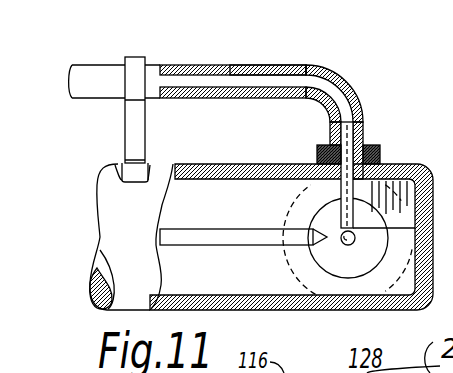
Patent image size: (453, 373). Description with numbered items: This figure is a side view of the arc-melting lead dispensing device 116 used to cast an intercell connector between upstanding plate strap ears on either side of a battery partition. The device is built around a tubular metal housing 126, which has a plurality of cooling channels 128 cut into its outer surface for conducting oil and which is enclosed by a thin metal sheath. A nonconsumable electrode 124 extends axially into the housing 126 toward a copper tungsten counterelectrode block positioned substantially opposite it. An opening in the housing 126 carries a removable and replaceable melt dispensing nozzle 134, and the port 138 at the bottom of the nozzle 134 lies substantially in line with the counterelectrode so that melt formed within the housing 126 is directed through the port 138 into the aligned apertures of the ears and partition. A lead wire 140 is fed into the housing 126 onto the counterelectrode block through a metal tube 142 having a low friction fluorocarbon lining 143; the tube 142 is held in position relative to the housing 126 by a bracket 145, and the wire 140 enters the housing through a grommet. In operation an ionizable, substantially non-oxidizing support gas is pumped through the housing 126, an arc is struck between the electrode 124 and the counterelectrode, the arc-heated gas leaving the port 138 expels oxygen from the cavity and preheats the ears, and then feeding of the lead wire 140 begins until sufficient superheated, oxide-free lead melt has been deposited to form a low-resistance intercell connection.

The arc-melting lead dispensing device 116 is at (400, 158).
The nonconsumable electrode 124 is at (247, 229).
The tubular metal housing 126 is at (283, 165).
The cooling channels 128 is at (218, 165).
The melt dispensing nozzle 134 is at (321, 212).
The port 138 is at (343, 245).
The lead wire 140 is at (332, 90).
The metal tube 142 is at (257, 65).
The low friction fluorocarbon lining 143 is at (193, 65).
The bracket 145 is at (136, 127).